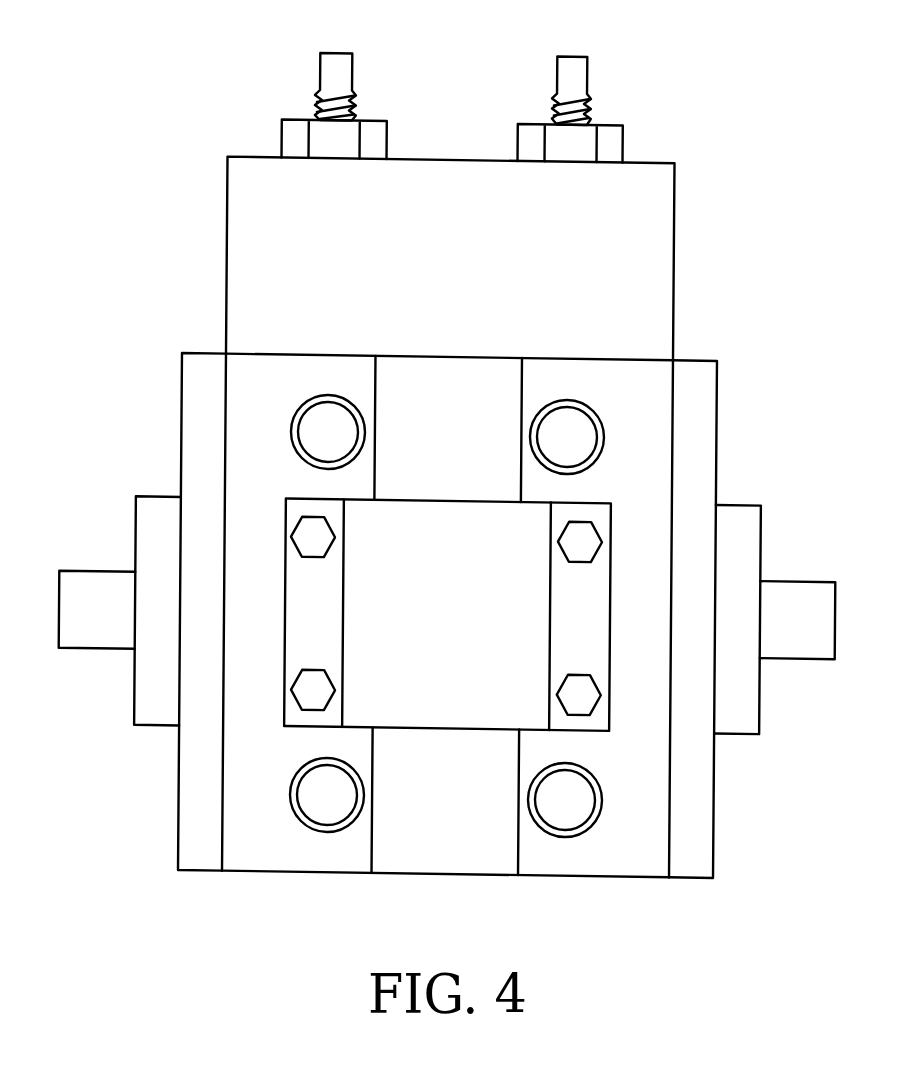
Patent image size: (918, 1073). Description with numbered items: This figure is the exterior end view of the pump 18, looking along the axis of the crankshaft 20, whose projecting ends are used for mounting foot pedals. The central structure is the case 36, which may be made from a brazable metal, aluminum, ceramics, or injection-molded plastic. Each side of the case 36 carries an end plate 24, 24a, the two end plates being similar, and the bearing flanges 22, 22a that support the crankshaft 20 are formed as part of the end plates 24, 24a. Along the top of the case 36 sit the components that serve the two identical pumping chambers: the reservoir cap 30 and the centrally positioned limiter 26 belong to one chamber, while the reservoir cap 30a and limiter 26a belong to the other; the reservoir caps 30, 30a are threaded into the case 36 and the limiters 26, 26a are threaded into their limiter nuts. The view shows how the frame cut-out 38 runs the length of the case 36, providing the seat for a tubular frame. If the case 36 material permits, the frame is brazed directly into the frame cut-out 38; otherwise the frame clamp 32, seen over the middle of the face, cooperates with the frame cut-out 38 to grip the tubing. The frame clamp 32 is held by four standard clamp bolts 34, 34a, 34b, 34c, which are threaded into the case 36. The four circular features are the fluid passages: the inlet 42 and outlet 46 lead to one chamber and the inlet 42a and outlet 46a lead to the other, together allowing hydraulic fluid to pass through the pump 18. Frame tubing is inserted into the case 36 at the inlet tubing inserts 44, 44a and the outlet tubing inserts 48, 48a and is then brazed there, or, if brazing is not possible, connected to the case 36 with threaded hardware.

The pump 18 is at (163, 214).
The crankshaft 20 is at (112, 607).
The bearing flange 22 is at (152, 517).
The bearing flange 22a is at (747, 518).
The end plate 24 is at (203, 379).
The end plate 24a is at (706, 376).
The limiter 26 is at (348, 76).
The limiter 26a is at (583, 78).
The reservoir cap 30 is at (383, 141).
The reservoir cap 30a is at (619, 137).
The frame clamp 32 is at (444, 543).
The clamp bolt 34 is at (312, 539).
The clamp bolt 34a is at (575, 536).
The clamp bolt 34b is at (317, 690).
The clamp bolt 34c is at (573, 698).
The case 36 is at (649, 222).
The frame cut-out 38 is at (448, 388).
The inlet 42 is at (315, 434).
The inlet 42a is at (568, 430).
The inlet tubing insert 44 is at (326, 397).
The inlet tubing insert 44a is at (558, 396).
The outlet 46 is at (319, 800).
The outlet 46a is at (566, 799).
The outlet tubing insert 48 is at (329, 837).
The outlet tubing insert 48a is at (577, 836).